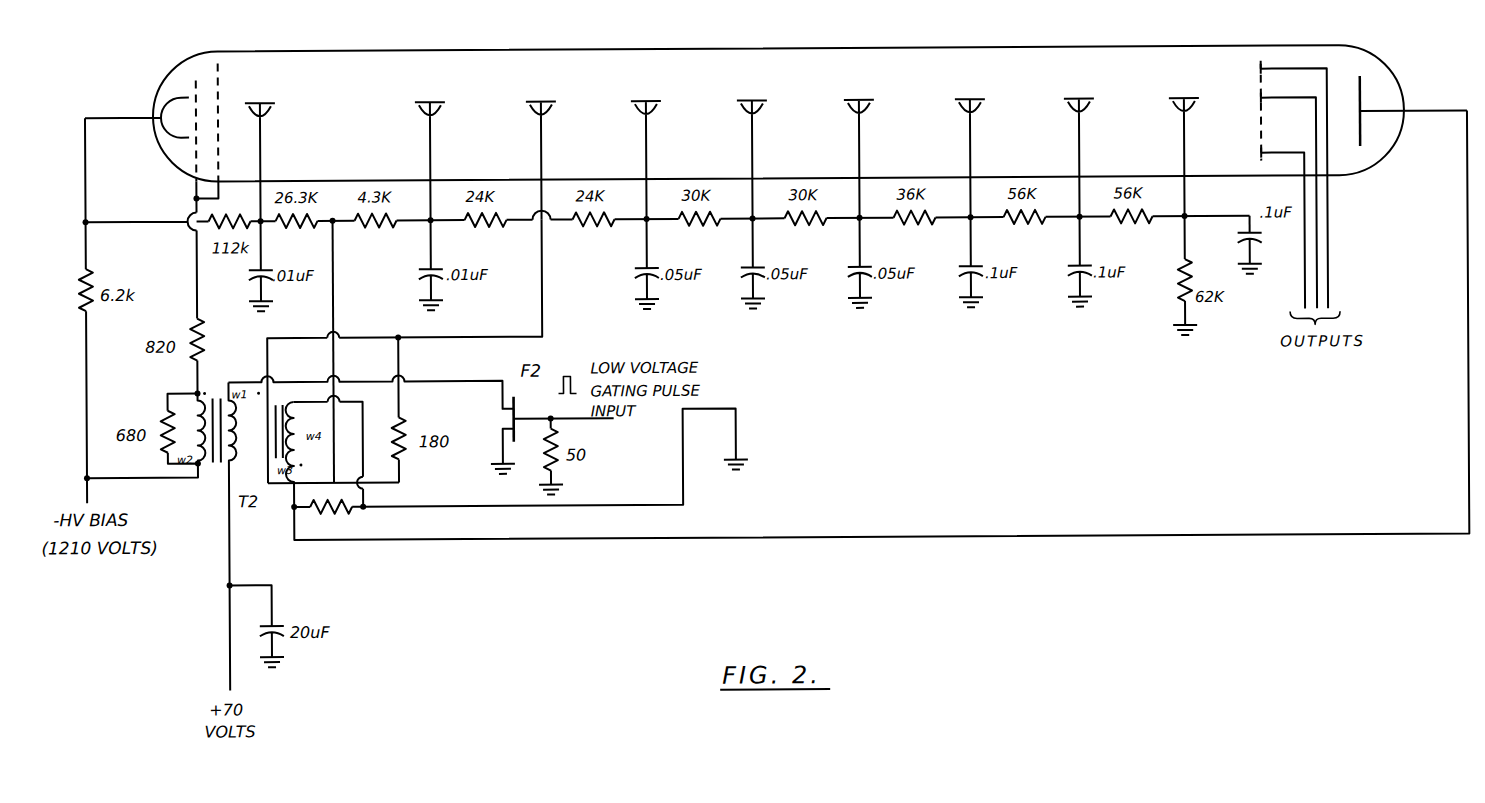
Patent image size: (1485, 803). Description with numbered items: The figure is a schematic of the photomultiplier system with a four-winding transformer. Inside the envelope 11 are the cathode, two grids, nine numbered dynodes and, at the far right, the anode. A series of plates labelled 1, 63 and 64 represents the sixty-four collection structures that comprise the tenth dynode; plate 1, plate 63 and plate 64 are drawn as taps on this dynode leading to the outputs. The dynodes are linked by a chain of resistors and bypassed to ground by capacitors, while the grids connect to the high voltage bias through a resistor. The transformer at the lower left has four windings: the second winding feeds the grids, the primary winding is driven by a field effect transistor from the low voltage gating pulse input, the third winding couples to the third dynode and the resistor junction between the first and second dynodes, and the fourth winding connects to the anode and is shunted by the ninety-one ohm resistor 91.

The envelope 11 is at (955, 51).
The 91 ohm resistor 91 is at (342, 512).
The collection structure plate 64 is at (1279, 185).
The collection structure plate 63 is at (1274, 202).
The collection structure plate 1 is at (1273, 225).